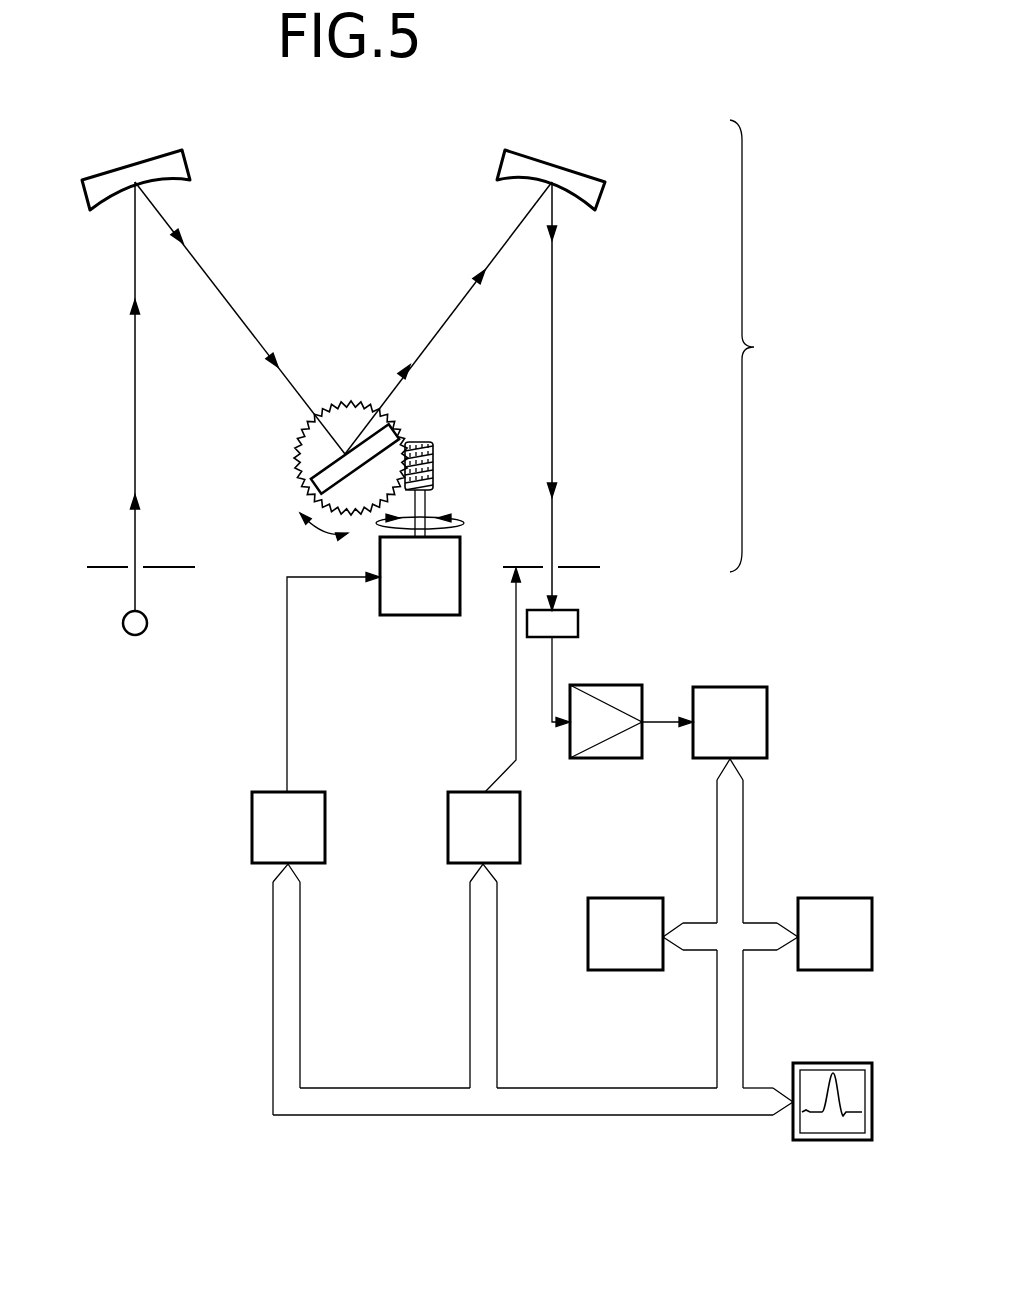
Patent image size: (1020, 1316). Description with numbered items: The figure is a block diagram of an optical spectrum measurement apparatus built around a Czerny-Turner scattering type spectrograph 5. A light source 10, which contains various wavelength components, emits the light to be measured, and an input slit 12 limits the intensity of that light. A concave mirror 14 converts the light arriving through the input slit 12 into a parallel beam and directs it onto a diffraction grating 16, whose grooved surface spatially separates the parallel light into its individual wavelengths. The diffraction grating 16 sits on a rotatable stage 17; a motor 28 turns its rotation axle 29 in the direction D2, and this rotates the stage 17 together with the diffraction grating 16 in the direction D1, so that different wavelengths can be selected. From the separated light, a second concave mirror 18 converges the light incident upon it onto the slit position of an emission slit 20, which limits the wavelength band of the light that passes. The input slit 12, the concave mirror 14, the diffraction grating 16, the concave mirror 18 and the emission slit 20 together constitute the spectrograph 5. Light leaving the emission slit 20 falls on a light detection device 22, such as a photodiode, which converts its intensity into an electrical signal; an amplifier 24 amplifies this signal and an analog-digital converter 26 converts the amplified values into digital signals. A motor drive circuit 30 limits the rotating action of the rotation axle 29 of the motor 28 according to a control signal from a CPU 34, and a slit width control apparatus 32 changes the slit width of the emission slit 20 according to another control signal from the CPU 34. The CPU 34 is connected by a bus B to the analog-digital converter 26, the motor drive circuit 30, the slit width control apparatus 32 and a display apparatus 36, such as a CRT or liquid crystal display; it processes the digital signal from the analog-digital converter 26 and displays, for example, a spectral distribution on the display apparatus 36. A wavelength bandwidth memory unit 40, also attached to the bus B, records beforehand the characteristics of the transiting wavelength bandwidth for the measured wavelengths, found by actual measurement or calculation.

The spectrograph 5 is at (755, 346).
The light source 10 is at (146, 631).
The input slit 12 is at (108, 568).
The concave mirror 14 is at (183, 152).
The diffraction grating 16 is at (307, 482).
The stage 17 is at (292, 420).
The concave mirror 18 is at (600, 205).
The emission slit 20 is at (577, 567).
The light detection device 22 is at (578, 613).
The amplifier 24 is at (603, 685).
The analog-digital converter 26 is at (753, 687).
The motor 28 is at (428, 616).
The rotation axle 29 is at (428, 497).
The motor drive circuit 30 is at (262, 792).
The slit width control apparatus 32 is at (457, 792).
The CPU 34 is at (835, 898).
The display apparatus 36 is at (832, 1063).
The wavelength bandwidth memory unit 40 is at (610, 898).
The bus B is at (717, 1007).
The rotation direction of the stage D1 is at (324, 542).
The rotation direction of the rotation axle D2 is at (438, 529).